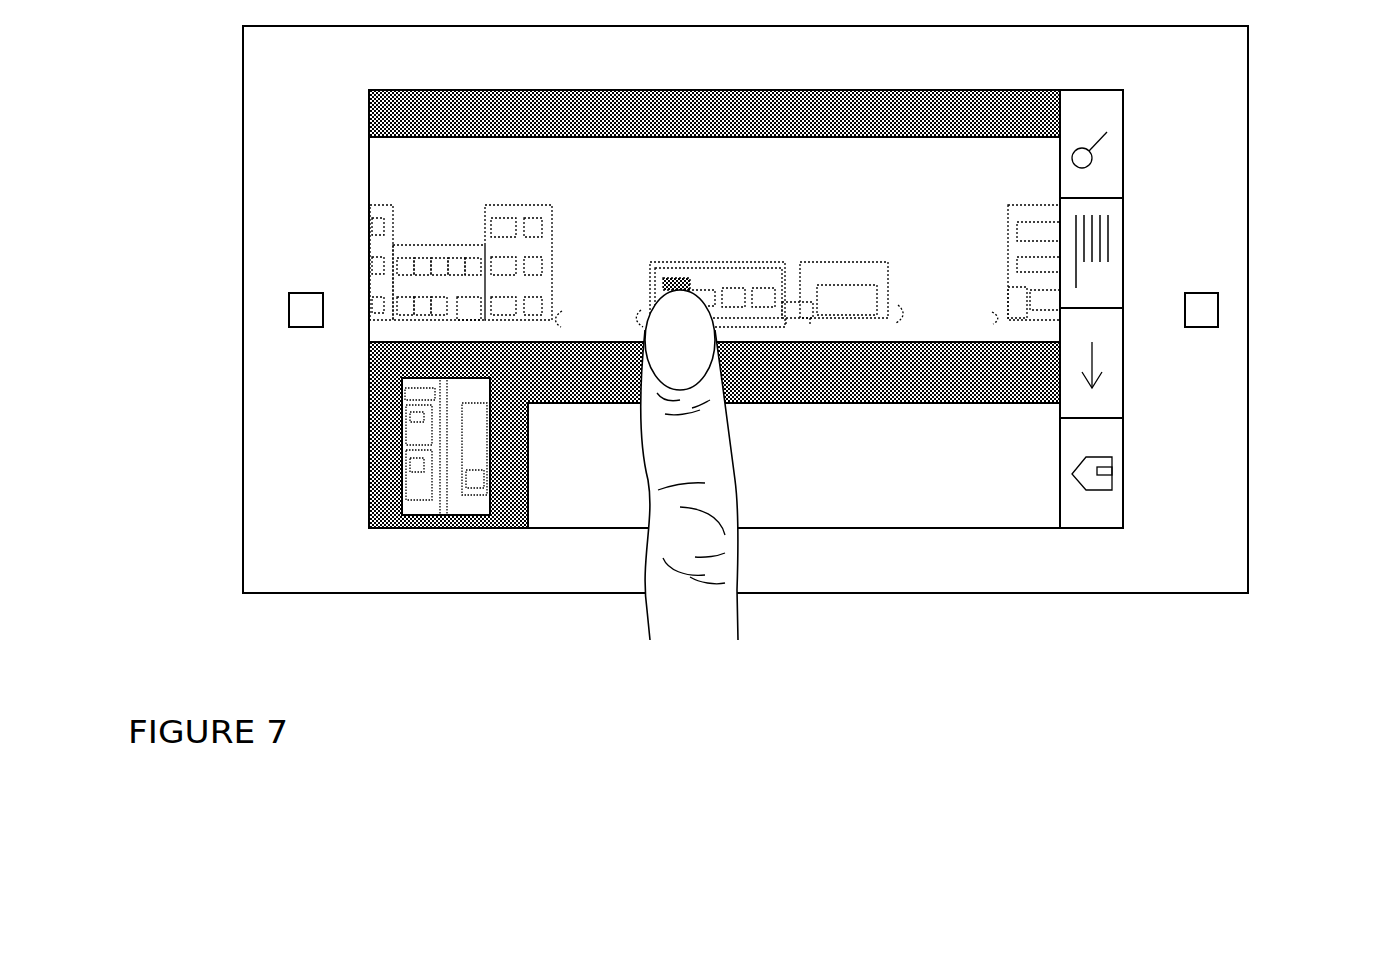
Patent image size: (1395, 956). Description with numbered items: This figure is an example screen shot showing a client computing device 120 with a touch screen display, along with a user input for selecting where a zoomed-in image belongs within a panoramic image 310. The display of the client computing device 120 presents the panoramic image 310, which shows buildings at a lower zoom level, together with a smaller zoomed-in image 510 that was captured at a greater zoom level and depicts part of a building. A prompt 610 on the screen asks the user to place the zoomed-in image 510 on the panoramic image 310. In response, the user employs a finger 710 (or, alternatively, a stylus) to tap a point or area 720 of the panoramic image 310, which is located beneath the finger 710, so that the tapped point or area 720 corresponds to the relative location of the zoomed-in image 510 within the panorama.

The client computing device 120 is at (243, 136).
The panoramic image 310 is at (370, 207).
The zoomed-in image 510 is at (370, 453).
The prompt 610 is at (490, 528).
The finger 710 is at (650, 610).
The point or area 720 is at (770, 305).